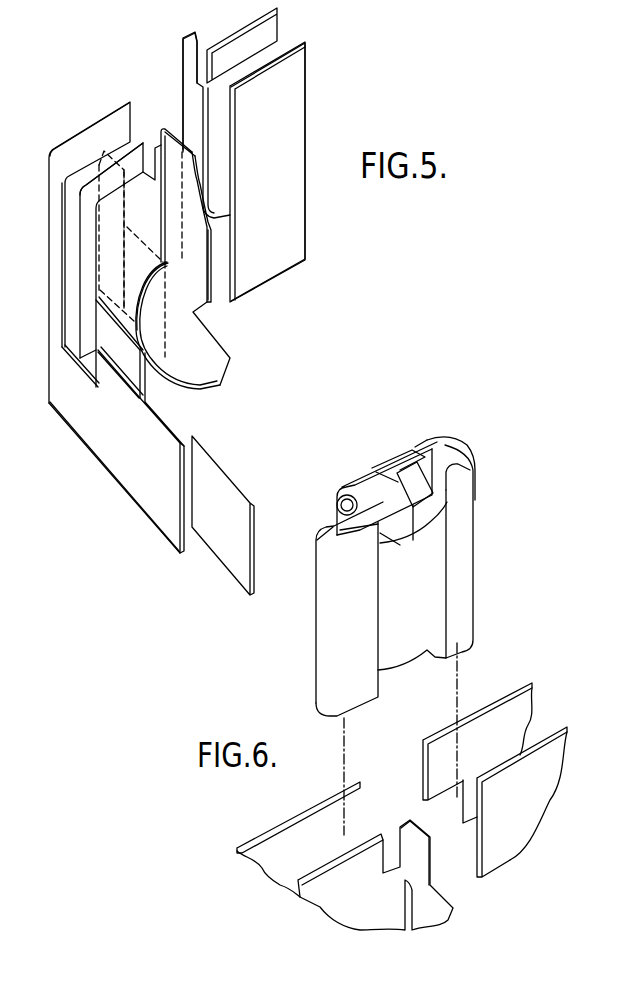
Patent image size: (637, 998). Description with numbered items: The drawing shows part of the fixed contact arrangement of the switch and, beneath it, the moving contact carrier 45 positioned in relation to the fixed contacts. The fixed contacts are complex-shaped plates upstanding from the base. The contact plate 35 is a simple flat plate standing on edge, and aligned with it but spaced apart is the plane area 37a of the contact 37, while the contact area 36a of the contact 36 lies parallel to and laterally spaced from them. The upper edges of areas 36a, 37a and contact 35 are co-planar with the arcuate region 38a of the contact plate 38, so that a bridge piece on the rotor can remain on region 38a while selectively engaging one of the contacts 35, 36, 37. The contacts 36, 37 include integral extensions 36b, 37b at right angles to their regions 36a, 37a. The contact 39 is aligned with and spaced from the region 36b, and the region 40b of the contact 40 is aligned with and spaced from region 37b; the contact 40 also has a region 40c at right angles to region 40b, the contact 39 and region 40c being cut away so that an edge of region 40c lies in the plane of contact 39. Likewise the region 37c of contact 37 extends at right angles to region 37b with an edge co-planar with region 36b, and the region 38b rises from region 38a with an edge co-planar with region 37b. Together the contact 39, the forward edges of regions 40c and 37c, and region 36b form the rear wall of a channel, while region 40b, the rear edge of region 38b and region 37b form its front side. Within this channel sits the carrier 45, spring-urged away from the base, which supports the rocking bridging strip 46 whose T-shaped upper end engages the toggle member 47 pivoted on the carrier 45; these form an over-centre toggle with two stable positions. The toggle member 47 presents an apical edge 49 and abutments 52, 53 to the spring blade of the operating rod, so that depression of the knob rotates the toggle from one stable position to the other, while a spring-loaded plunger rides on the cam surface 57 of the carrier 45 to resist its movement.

In FIG. 5, the contact plate 35 is at (213, 468).
In FIG. 5, the contact plate 36 is at (133, 477).
In FIG. 5, the contact area 36a is at (110, 437).
In FIG. 5, the integral extension 36b is at (90, 143).
In FIG. 6, the integral extension 36b is at (323, 813).
In FIG. 5, the contact plate 37 is at (80, 322).
In FIG. 5, the plane area 37a is at (98, 343).
In FIG. 5, the integral extension 37b is at (100, 183).
In FIG. 6, the integral extension 37b is at (323, 883).
In FIG. 5, the region 37c is at (123, 237).
In FIG. 5, the contact plate 38 is at (202, 270).
In FIG. 5, the arcuate region 38a is at (195, 345).
In FIG. 5, the region 38b is at (198, 248).
In FIG. 6, the region 38b is at (428, 917).
In FIG. 5, the contact plate 39 is at (273, 48).
In FIG. 6, the contact plate 39 is at (497, 717).
In FIG. 5, the contact plate 40 is at (288, 162).
In FIG. 5, the region 40b is at (293, 125).
In FIG. 6, the region 40b is at (527, 812).
In FIG. 5, the region 40c is at (193, 117).
In FIG. 6, the moving contact carrier 45 is at (322, 582).
In FIG. 6, the bridging strip 46 is at (324, 545).
In FIG. 6, the toggle member 47 is at (410, 463).
In FIG. 6, the apical edge 49 is at (422, 492).
In FIG. 6, the abutment 52 is at (422, 492).
In FIG. 6, the abutment 53 is at (380, 522).
In FIG. 6, the cam surface 57 is at (423, 558).